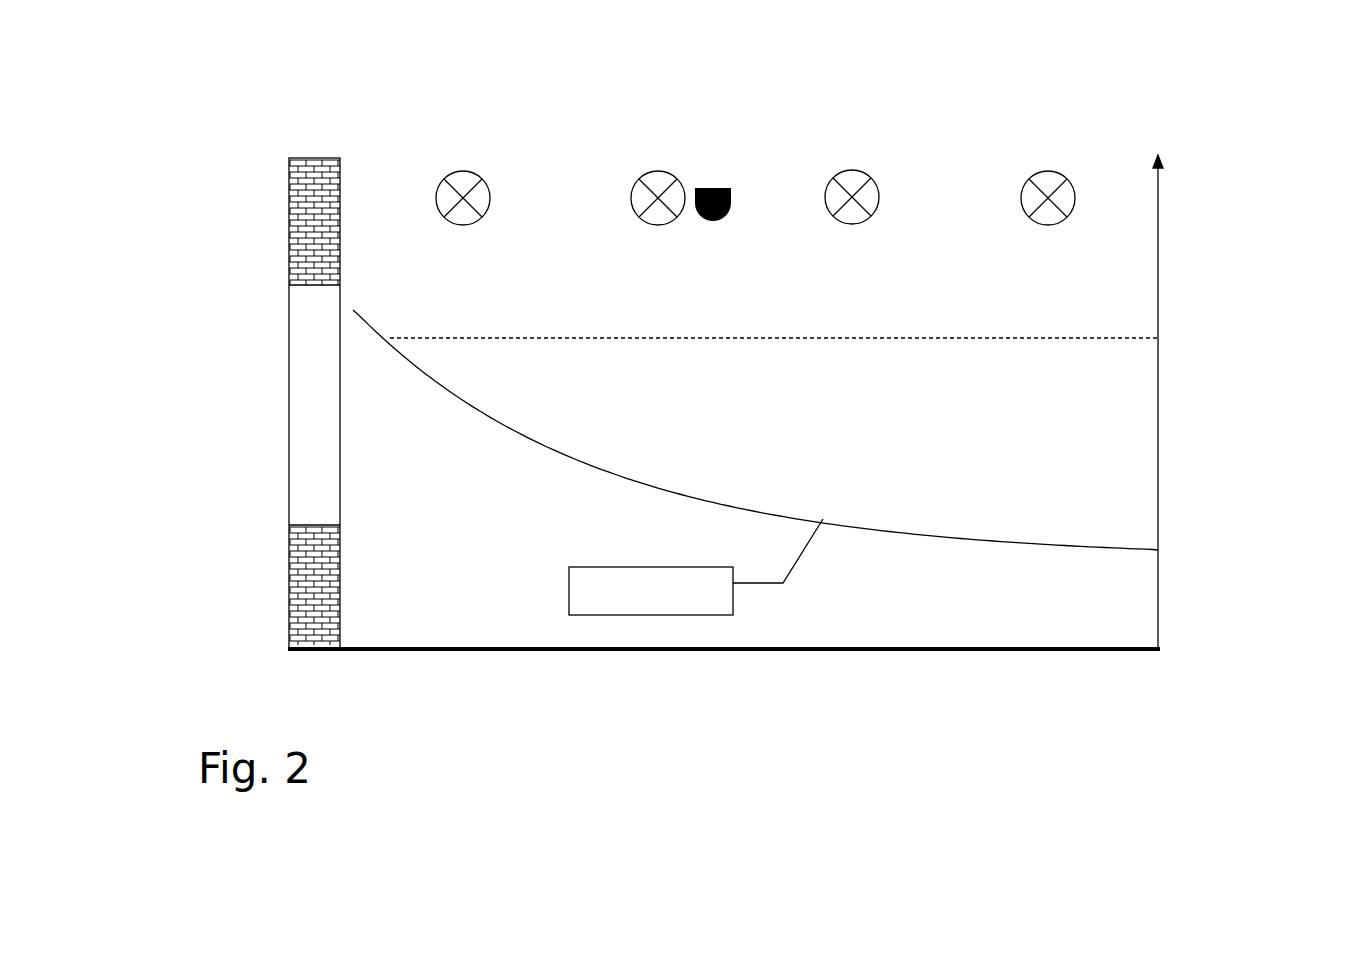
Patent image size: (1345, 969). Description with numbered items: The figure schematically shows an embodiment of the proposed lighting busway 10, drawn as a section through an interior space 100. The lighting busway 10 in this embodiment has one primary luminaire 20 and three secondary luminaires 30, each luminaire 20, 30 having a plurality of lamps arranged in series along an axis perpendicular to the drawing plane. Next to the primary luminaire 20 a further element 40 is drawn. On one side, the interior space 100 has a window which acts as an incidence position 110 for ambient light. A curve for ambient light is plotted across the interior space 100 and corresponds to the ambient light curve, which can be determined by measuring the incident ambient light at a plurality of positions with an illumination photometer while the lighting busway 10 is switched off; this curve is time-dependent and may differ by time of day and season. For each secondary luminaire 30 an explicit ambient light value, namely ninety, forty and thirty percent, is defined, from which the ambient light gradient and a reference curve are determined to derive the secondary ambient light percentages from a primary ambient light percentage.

The lighting busway 10 is at (763, 128).
The primary luminaire 20 is at (652, 184).
The secondary luminaires 30 is at (463, 186).
The light sensor 40 is at (715, 188).
The interior space 100 is at (1097, 437).
The incidence position 110 is at (303, 402).